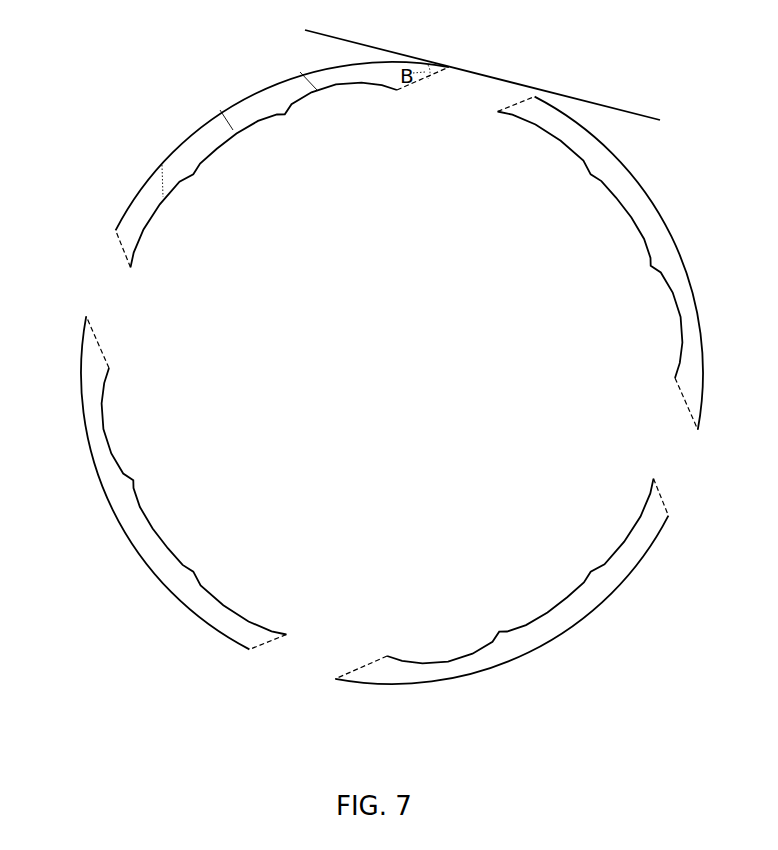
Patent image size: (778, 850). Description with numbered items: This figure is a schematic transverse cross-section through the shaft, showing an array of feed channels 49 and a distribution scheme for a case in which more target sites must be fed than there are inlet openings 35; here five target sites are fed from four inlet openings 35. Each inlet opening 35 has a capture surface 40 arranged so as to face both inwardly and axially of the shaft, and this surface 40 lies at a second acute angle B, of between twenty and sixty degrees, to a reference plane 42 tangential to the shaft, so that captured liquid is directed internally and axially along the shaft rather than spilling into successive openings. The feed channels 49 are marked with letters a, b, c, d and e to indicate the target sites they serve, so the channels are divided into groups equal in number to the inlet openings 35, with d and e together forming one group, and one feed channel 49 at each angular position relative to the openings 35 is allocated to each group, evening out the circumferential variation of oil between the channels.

The inlet opening 35 is at (390, 367).
The capture surface 40 is at (392, 373).
The reference plane 42 is at (627, 108).
The feed channel 49 is at (297, 73).